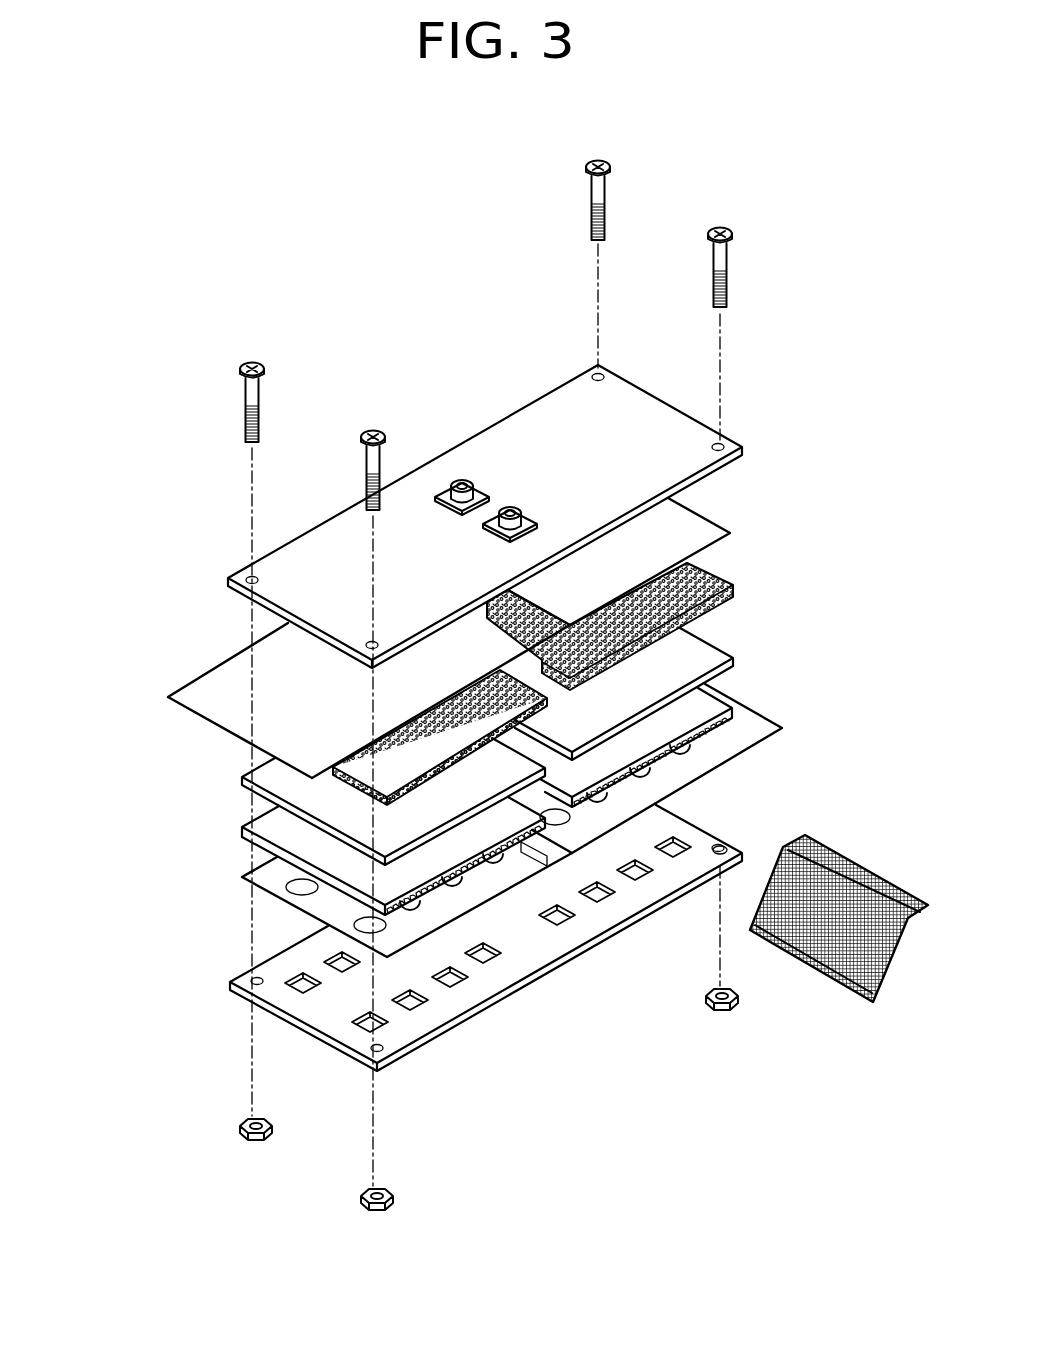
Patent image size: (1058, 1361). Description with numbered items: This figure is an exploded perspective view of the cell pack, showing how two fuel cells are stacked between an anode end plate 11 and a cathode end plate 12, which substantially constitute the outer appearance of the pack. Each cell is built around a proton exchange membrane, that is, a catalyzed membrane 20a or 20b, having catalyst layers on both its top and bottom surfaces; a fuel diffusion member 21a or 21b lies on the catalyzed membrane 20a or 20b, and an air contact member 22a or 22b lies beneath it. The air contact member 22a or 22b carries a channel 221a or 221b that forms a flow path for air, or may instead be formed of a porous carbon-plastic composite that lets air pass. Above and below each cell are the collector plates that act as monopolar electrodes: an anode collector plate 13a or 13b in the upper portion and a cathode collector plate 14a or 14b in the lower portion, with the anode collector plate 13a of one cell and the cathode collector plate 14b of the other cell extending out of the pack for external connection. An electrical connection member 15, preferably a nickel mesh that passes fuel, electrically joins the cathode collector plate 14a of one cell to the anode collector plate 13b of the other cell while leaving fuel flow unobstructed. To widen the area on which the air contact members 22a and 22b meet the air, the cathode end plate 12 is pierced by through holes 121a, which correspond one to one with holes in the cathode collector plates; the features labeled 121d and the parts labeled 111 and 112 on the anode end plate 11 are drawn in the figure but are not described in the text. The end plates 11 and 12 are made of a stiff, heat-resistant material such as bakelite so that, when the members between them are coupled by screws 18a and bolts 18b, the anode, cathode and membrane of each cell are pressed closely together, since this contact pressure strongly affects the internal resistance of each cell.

The anode end plate 11 is at (524, 418).
The first terminal 111 is at (460, 484).
The second terminal 112 is at (515, 513).
The cathode end plate 12 is at (472, 1010).
The through holes 121a is at (388, 1022).
The openings of lower case 121d is at (583, 908).
The anode collector plate 13a is at (192, 692).
The anode collector plate 13b is at (733, 534).
The cathode collector plate 14a is at (242, 880).
The cathode collector plate 14b is at (752, 750).
The electrical connection member 15 is at (851, 862).
The screws 18a is at (251, 360).
The bolts 18b is at (256, 1142).
The catalyzed membrane 20a is at (242, 778).
The catalyzed membrane 20b is at (736, 660).
The fuel diffusion member 21a is at (340, 784).
The fuel diffusion member 21b is at (736, 596).
The air contact member 22a is at (242, 832).
The air contact member 22b is at (735, 712).
The channel 221a is at (442, 893).
The channel 221b is at (708, 738).